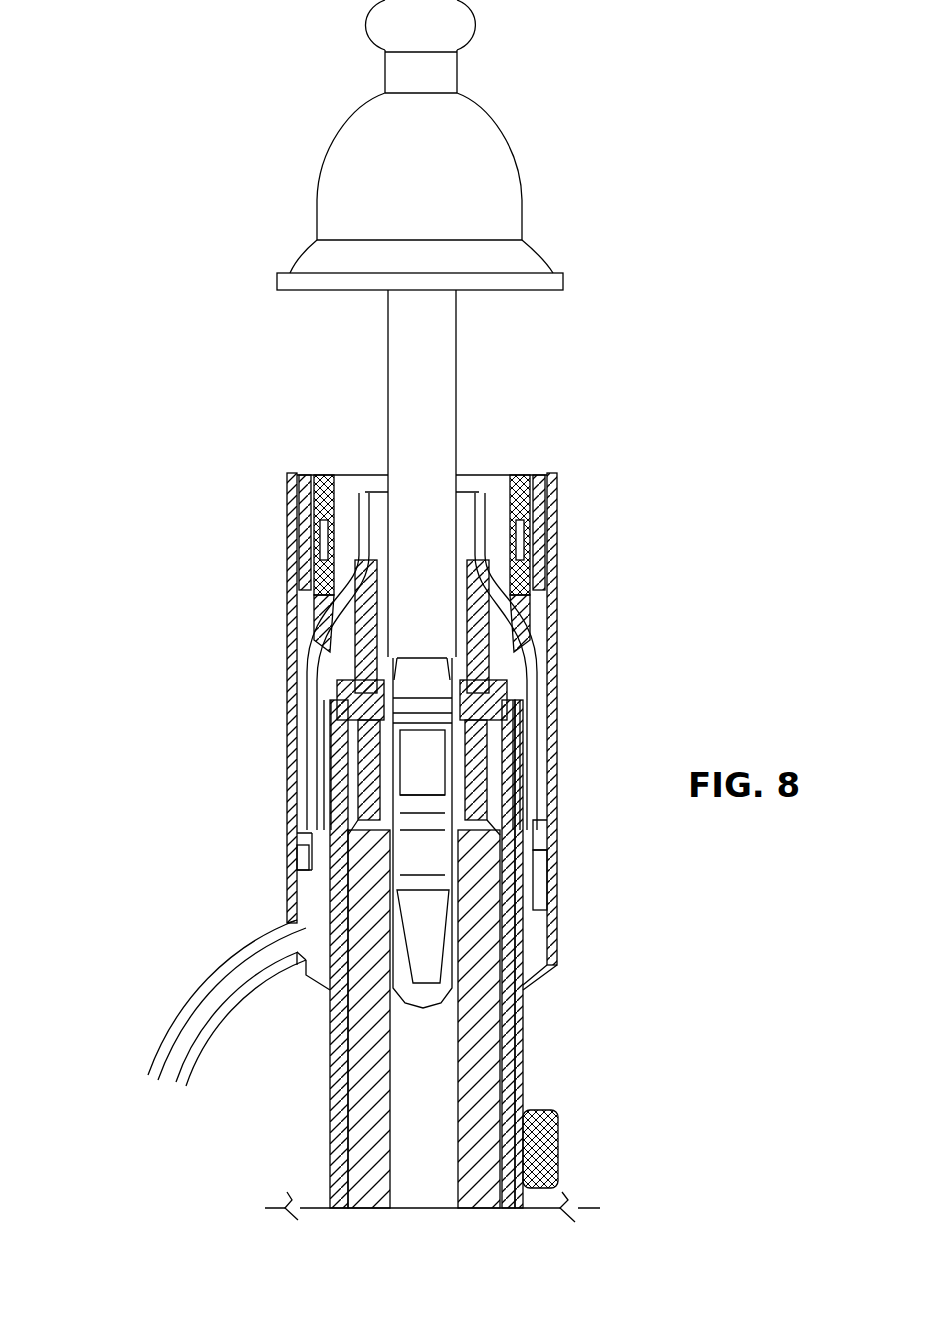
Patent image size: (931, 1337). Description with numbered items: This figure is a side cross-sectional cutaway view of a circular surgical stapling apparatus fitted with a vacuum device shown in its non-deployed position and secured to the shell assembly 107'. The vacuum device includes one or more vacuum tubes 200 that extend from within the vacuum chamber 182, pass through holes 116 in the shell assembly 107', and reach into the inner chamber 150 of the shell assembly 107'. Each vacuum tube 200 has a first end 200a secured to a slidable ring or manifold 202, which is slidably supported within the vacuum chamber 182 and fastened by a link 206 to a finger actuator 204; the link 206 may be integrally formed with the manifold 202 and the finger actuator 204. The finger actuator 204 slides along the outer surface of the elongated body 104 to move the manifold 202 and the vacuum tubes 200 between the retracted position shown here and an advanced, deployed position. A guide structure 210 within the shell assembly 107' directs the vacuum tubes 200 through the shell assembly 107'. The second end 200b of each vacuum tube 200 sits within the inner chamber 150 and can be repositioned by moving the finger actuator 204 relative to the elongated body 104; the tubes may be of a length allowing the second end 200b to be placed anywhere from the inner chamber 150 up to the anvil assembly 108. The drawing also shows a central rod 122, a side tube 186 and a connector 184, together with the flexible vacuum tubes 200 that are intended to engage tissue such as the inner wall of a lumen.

The anvil assembly 108 is at (522, 180).
The valve stem rod 122 is at (457, 378).
The inner chamber 150 is at (557, 542).
The shell assembly 107' is at (642, 747).
The second end 200b is at (558, 485).
The vacuum tube 200 is at (556, 612).
The hole 116 is at (556, 648).
The guide structure 210 is at (290, 615).
The vacuum chamber 182 is at (520, 750).
The elongated body 104 is at (330, 1158).
The link 206 is at (530, 1030).
The finger actuator 204 is at (560, 1140).
The first end 200a is at (556, 820).
The manifold 202 is at (557, 845).
The side tube 186 is at (170, 1023).
The tube connector 184 is at (300, 940).